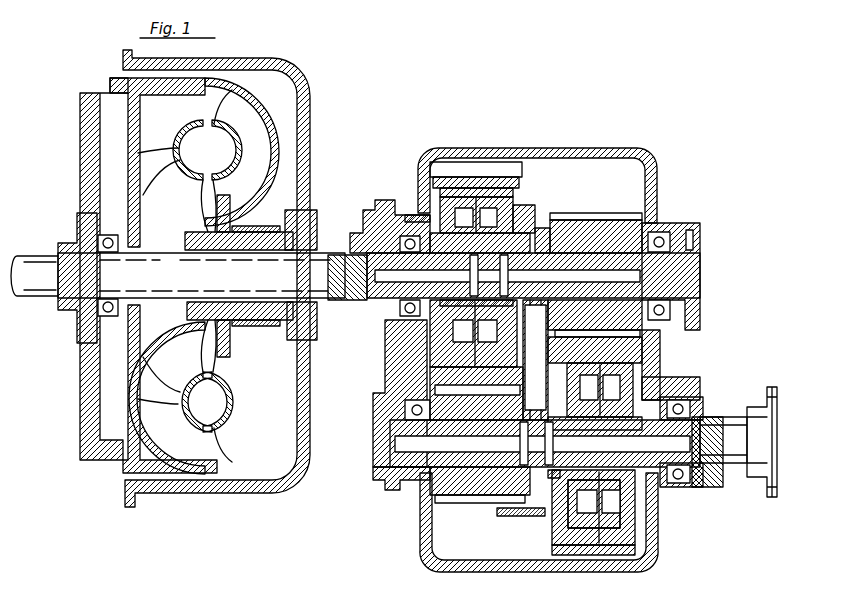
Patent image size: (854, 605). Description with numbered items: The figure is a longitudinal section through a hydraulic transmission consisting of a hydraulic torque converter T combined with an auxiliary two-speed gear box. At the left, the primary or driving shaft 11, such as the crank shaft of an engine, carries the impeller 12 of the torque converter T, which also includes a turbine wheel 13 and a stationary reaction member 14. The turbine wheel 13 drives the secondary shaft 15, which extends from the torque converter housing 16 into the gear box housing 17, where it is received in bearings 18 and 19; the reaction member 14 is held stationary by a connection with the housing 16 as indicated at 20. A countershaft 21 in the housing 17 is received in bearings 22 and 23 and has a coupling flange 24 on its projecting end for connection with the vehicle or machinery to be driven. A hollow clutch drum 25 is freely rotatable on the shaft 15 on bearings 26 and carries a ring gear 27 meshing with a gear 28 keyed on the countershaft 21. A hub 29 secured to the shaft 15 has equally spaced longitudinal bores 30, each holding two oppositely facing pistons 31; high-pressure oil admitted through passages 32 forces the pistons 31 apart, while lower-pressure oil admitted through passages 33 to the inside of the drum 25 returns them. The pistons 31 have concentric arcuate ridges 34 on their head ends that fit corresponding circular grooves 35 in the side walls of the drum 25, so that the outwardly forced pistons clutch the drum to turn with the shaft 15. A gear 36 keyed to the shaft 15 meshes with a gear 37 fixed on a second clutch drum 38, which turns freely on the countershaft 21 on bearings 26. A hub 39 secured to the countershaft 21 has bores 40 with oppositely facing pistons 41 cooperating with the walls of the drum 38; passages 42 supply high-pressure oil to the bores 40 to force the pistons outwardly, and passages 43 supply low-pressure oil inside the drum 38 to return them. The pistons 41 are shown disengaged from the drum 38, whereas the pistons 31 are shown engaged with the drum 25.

The hydraulic torque converter T is at (246, 93).
The primary or driving shaft 11 is at (43, 312).
The impeller 12 is at (277, 140).
The turbine wheel 13 is at (143, 110).
The stationary reaction member 14 is at (158, 210).
The secondary shaft 15 is at (201, 275).
The torque converter housing 16 is at (310, 408).
The gear box housing 17 is at (637, 148).
The bearing 18 is at (385, 313).
The bearing 19 is at (670, 310).
The connection 20 is at (298, 345).
The countershaft 21 is at (488, 470).
The bearing 22 is at (403, 482).
The bearing 23 is at (663, 515).
The coupling flange 24 is at (752, 498).
The hollow clutch drum 25 is at (522, 206).
The bearings 26 is at (385, 350).
The ring gear 27 is at (493, 167).
The gear 28 is at (453, 510).
The hub 29 is at (512, 247).
The longitudinal bores 30 is at (473, 200).
The pistons 31 is at (510, 203).
The passages 32 is at (360, 245).
The passages 33 is at (600, 273).
The concentric arcuate ridges 34 is at (551, 336).
The circular grooves 35 is at (437, 230).
The gear 36 is at (573, 220).
The gear 37 is at (570, 556).
The clutch drum 38 is at (553, 527).
The hub 39 is at (597, 533).
The bores 40 is at (565, 354).
The pistons 41 is at (648, 352).
The passages 42 is at (690, 488).
The passages 43 is at (385, 467).